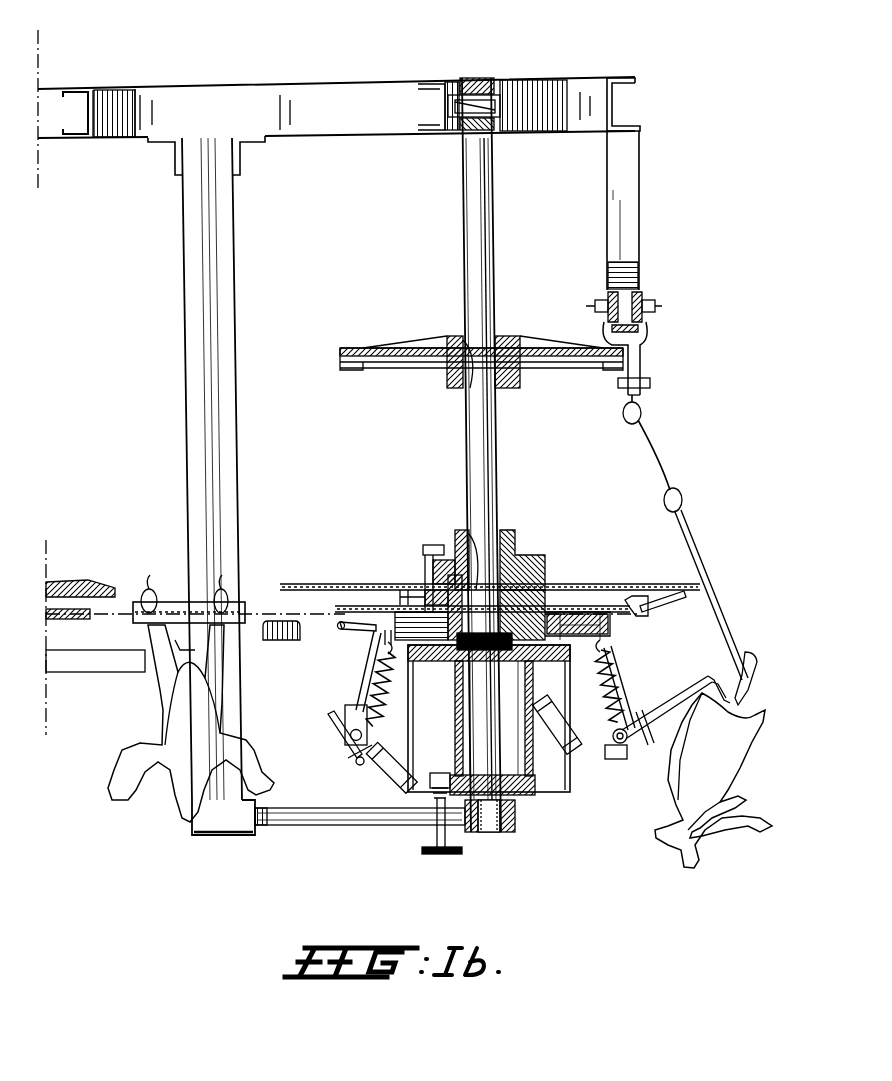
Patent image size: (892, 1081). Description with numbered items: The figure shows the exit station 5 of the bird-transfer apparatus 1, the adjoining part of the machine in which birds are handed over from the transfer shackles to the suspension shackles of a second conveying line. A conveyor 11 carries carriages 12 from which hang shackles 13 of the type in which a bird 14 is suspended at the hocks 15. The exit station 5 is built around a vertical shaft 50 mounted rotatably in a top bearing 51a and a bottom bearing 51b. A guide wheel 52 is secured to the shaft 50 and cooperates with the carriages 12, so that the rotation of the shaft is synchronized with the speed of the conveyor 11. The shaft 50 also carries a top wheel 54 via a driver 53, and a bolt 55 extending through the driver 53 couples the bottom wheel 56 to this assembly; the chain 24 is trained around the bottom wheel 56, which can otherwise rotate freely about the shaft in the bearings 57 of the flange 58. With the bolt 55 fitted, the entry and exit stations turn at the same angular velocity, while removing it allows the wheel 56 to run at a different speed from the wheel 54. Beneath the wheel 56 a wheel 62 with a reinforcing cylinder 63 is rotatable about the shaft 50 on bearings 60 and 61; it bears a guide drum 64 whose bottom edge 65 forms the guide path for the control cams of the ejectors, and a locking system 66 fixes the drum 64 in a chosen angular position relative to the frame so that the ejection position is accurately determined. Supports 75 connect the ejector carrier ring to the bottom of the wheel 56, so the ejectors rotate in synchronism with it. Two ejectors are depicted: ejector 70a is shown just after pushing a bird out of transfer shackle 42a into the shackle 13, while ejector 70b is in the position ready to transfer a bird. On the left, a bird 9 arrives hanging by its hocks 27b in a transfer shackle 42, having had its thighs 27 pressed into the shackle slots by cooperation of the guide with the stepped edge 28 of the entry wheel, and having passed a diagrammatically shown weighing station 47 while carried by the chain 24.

The complete apparatus 1 is at (350, 72).
The exit station 5 is at (504, 67).
The top bearing 51a is at (483, 104).
The vertical shaft 50 is at (487, 245).
The bird 9 is at (210, 730).
The conveyor 11 is at (632, 275).
The carriage 12 is at (646, 346).
The guide wheel 52 is at (535, 346).
The driver 53 is at (515, 553).
The top wheel 54 is at (365, 586).
The bolt 55 is at (430, 566).
The bearings 57 is at (420, 588).
The flange 58 is at (575, 590).
The bottom wheel 56 is at (608, 605).
The bearing 61 is at (532, 790).
The guide drum 64 is at (413, 697).
The reinforcing cylinder 63 is at (535, 735).
The bottom bearing 51b is at (510, 835).
The locking system 66 is at (432, 800).
The wheel 62 is at (375, 643).
The ejector 70b is at (352, 677).
The bottom edge 65 is at (413, 770).
The bearing 60 is at (535, 692).
The supports 75 is at (626, 680).
The ejector 70a is at (600, 740).
The shackle 13 is at (690, 545).
The hocks 15 is at (758, 662).
The bird 14 is at (728, 762).
The transfer shackle 42 is at (243, 603).
The hocks 27b is at (150, 589).
The stepped edge 28 is at (112, 584).
The chain 24 is at (108, 617).
The weighing station 47 is at (270, 640).
The thighs 27 is at (165, 680).
The transfer shackle 42a is at (652, 617).